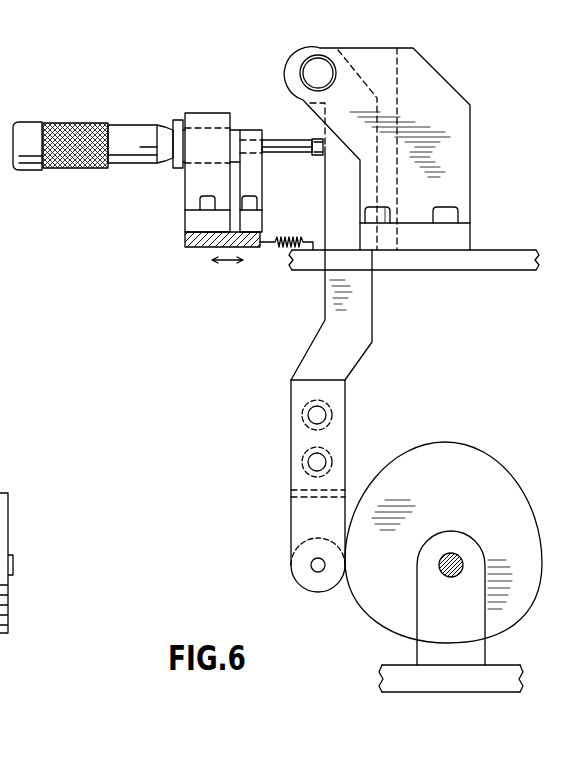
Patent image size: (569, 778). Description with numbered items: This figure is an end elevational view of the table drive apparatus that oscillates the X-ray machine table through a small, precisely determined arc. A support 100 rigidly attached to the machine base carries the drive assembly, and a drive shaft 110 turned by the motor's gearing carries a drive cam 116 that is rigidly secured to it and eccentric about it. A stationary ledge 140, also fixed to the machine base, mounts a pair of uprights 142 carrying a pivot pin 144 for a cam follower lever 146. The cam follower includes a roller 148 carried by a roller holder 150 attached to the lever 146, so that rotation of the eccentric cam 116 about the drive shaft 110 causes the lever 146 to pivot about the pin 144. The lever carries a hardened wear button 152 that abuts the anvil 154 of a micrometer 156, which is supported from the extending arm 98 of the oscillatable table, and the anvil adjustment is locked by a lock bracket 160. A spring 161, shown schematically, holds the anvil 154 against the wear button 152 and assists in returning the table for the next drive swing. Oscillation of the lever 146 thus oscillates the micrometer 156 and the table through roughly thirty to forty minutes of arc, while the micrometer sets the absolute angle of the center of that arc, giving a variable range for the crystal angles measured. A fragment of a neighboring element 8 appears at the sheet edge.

The partial element at sheet edge 8 is at (6, 581).
The extending arm 98 is at (192, 250).
The support 100 is at (380, 678).
The drive shaft 110 is at (456, 558).
The drive cam 116 is at (453, 443).
The stationary ledge 140 is at (487, 257).
The uprights 142 is at (470, 117).
The pivot pin 144 is at (312, 73).
The cam follower lever 146 is at (295, 373).
The roller 148 is at (317, 588).
The roller holder 150 is at (289, 513).
The hardened wear button 152 is at (318, 157).
The anvil 154 is at (296, 140).
The micrometer 156 is at (120, 120).
The lock bracket 160 is at (262, 192).
The spring 161 is at (278, 248).